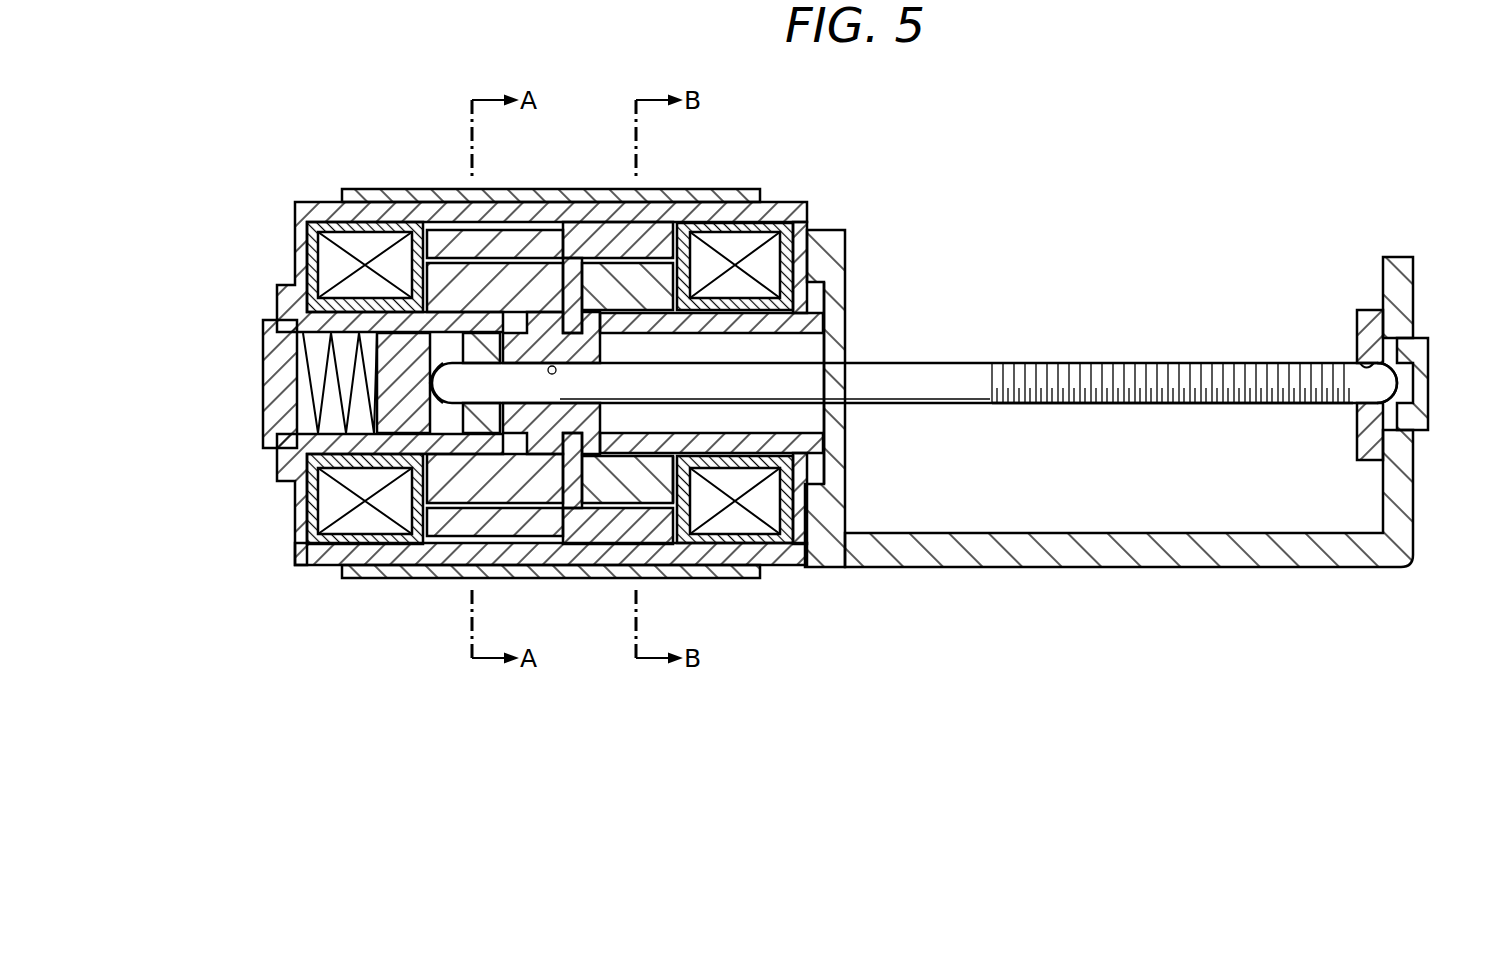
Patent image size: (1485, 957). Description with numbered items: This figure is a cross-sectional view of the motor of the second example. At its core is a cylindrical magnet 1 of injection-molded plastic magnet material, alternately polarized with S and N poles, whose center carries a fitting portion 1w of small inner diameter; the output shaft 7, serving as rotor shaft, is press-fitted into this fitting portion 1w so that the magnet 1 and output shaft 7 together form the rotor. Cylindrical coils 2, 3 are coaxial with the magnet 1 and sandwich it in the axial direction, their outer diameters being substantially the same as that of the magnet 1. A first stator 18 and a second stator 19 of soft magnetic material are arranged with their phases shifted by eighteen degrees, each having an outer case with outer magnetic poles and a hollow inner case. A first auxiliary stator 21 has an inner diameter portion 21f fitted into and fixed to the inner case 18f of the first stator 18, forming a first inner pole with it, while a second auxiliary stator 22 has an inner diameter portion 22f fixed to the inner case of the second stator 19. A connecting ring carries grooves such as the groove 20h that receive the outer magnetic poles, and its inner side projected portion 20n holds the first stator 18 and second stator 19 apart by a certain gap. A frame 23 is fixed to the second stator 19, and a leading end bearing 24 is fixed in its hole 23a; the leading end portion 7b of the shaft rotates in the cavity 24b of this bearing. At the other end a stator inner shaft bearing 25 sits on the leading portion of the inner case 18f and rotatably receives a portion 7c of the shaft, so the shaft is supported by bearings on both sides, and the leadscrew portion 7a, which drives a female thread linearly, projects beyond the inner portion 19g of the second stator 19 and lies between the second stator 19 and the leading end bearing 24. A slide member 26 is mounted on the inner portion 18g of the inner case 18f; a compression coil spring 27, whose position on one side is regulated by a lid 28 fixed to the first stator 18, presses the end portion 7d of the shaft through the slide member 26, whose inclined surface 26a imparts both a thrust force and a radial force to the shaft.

The magnet 1 is at (652, 232).
The fitting portion 1w is at (553, 366).
The coil 2 is at (330, 548).
The coil 3 is at (762, 543).
The output shaft 7 is at (865, 373).
The leadscrew portion 7a is at (1115, 363).
The leading end portion 7b is at (1391, 393).
The portion of the rotor shaft 7c is at (473, 377).
The end portion 7d is at (405, 437).
The first stator 18 is at (305, 240).
The inner case 18f is at (450, 250).
The inner portion 18g is at (395, 245).
The second stator 19 is at (812, 230).
The inner portion 19g is at (838, 418).
The groove 20h is at (710, 192).
The inner side projected portion 20n is at (590, 578).
The first auxiliary stator 21 is at (497, 505).
The inner diameter portion 21f is at (472, 505).
The second auxiliary stator 22 is at (618, 503).
The inner diameter portion 22f is at (655, 540).
The frame 23 is at (1140, 560).
The hole 23a is at (1424, 342).
The leading end bearing 24 is at (1373, 313).
The cavity 24b is at (1362, 368).
The stator inner shaft bearing 25 is at (520, 452).
The slide member 26 is at (343, 532).
The inclined surface 26a is at (420, 470).
The compression coil spring 27 is at (322, 415).
The lid 28 is at (268, 357).